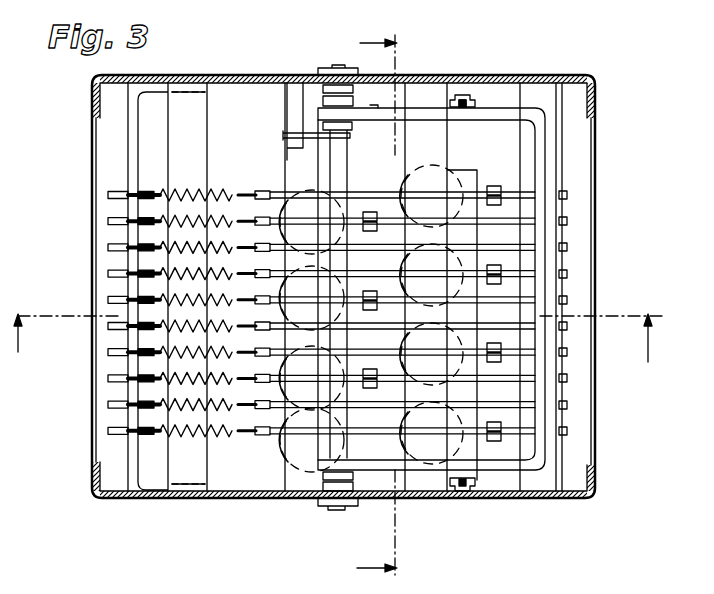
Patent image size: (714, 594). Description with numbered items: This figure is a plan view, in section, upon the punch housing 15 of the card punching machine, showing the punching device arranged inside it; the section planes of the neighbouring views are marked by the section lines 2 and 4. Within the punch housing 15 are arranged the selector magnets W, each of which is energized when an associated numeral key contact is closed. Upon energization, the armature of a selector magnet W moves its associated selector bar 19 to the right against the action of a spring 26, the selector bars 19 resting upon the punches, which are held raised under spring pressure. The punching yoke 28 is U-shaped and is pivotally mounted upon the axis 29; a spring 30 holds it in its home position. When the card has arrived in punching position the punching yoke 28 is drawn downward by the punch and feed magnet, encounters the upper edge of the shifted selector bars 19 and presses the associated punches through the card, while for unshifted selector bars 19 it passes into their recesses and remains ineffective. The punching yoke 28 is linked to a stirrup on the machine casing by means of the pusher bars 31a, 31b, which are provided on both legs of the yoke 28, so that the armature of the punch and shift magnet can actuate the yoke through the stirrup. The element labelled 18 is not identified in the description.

The punch housing 15 is at (595, 135).
The relay coil 18 is at (422, 445).
The selector bar 19 is at (530, 205).
The spring 26 is at (172, 438).
The punching yoke 28 is at (533, 118).
The axis 29 is at (317, 458).
The spring 30 is at (310, 133).
The pusher bar 31a is at (485, 496).
The pusher bar 31b is at (466, 96).
The selector magnet W is at (165, 243).
The section line 2- 2 is at (341, 338).
The section line 4- 4 is at (377, 296).